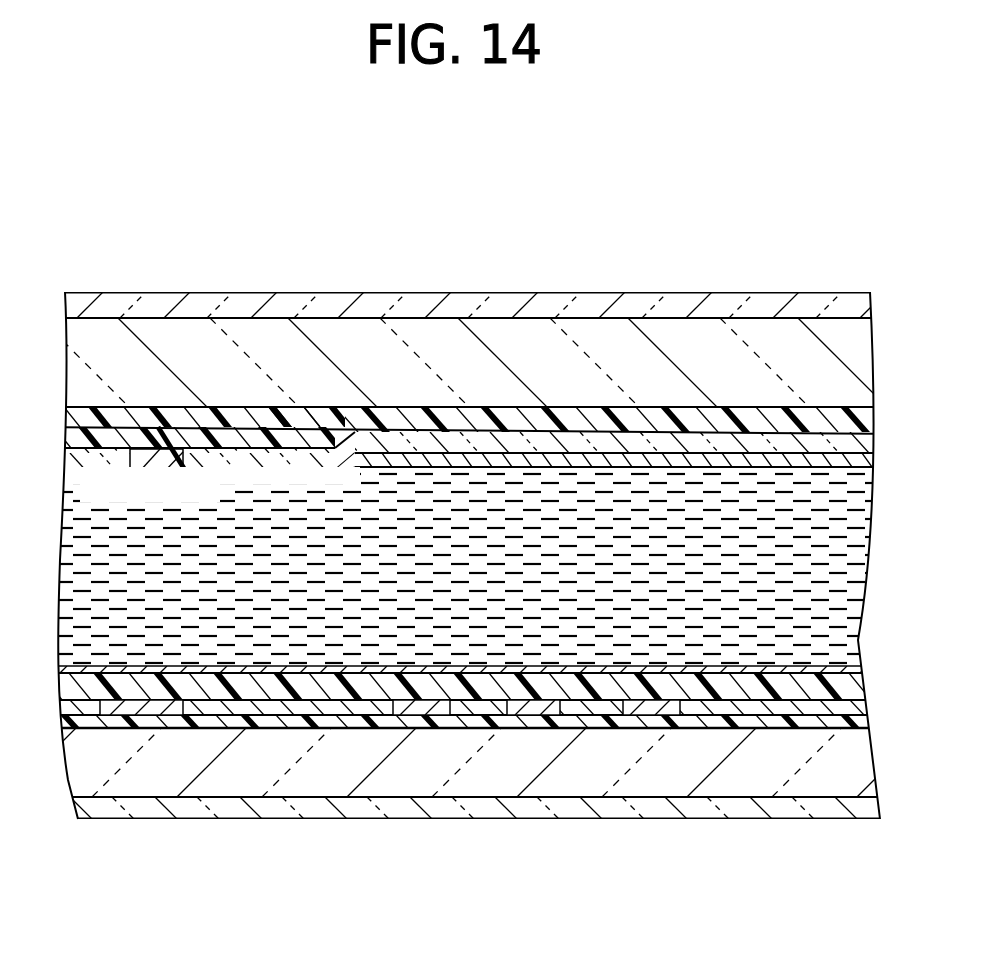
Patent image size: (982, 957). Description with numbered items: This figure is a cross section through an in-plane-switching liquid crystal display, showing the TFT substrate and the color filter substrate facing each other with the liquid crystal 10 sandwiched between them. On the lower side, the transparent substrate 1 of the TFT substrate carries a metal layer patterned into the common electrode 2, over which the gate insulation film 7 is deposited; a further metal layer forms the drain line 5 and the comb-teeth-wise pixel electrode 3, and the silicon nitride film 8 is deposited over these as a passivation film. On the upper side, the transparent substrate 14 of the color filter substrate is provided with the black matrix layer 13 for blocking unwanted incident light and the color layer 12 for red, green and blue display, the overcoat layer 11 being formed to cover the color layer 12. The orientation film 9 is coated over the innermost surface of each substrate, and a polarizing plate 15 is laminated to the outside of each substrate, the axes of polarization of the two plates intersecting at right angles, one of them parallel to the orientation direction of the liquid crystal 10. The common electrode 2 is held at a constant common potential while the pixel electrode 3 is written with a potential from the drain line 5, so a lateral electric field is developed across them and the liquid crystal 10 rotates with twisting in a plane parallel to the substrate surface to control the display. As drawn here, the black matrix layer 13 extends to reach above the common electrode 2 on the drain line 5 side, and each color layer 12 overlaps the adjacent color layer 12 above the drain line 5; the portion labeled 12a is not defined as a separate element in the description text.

The transparent substrate 1 is at (763, 783).
The common electrode 2 is at (540, 727).
The pixel electrode 3 is at (650, 705).
The drain line 5 is at (148, 705).
The gate insulation film 7 is at (703, 727).
The silicon nitride film 8 is at (457, 712).
The orientation film 9 is at (780, 462).
The liquid crystal 10 is at (678, 480).
The overcoat layer 11 is at (617, 447).
The color layer 12 is at (102, 433).
The electrode contact portion 12a is at (150, 457).
The black matrix layer 13 is at (293, 417).
The transparent substrate 14 is at (405, 330).
The polarizing plate 15 is at (830, 308).